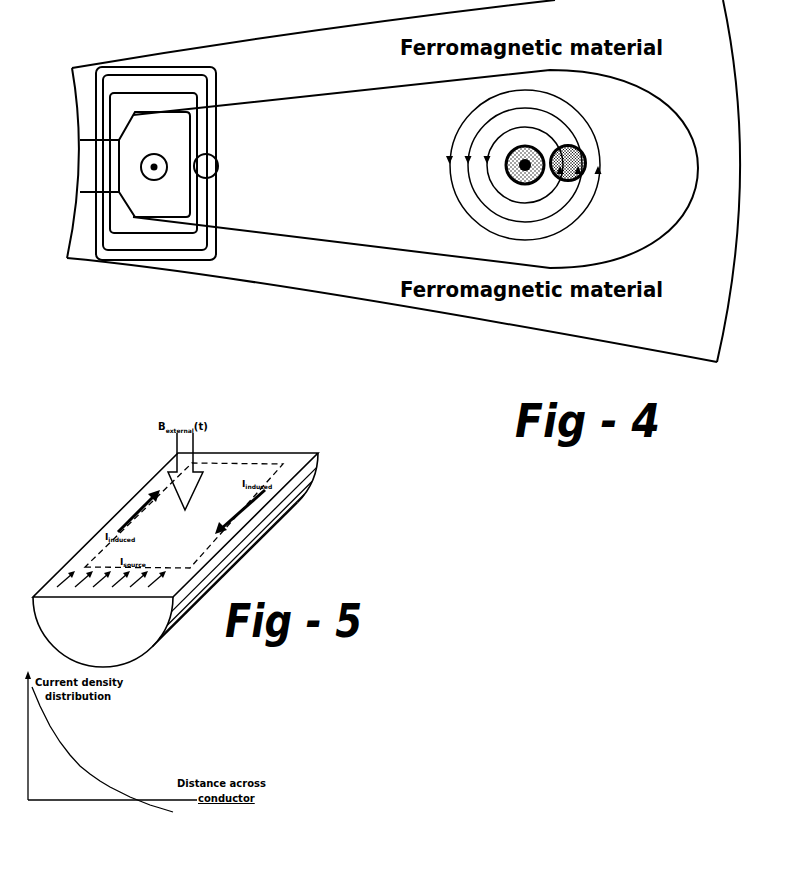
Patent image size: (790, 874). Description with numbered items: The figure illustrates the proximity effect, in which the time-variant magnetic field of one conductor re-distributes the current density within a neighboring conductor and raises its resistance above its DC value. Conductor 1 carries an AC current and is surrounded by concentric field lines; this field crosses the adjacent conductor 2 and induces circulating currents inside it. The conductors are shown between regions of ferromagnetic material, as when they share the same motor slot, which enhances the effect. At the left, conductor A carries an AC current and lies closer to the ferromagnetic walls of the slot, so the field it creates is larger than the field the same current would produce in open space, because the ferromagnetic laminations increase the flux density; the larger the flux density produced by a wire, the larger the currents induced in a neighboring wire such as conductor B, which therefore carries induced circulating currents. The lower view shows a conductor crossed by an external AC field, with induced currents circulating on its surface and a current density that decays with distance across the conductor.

The conductor 1 is at (525, 155).
The conductor 2 is at (569, 152).
The conductor A is at (152, 158).
The conductor B is at (213, 159).